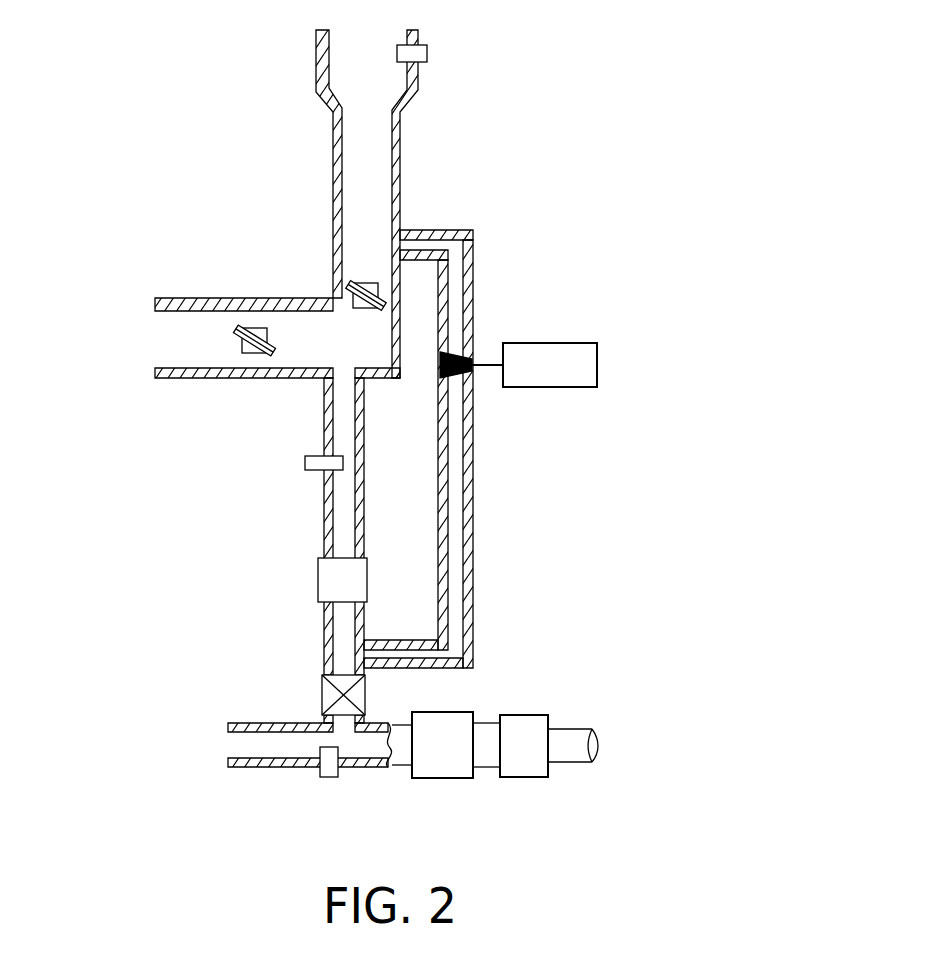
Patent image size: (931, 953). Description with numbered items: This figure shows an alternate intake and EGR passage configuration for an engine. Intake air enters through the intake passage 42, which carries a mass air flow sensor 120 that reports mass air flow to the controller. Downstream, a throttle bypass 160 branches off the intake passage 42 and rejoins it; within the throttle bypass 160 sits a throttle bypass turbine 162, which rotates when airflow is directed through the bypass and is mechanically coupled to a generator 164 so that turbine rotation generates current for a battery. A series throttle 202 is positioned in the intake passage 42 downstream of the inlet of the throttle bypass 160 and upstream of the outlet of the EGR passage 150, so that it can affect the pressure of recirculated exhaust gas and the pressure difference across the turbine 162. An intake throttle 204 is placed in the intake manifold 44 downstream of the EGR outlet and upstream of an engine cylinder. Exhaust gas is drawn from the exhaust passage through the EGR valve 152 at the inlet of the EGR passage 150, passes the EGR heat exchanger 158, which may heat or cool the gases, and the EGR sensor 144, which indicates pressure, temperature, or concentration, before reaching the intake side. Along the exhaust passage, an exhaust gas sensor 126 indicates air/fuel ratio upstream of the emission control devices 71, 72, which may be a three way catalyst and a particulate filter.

The intake passage 42 is at (381, 84).
The intake manifold 44 is at (196, 353).
The mass air flow sensor 120 is at (427, 46).
The throttle bypass 160 is at (498, 211).
The throttle bypass turbine 162 is at (440, 365).
The generator 164 is at (572, 377).
The series throttle 202 is at (358, 285).
The intake throttle 204 is at (253, 328).
The EGR sensor 144 is at (305, 463).
The EGR passage 150 is at (324, 519).
The EGR heat exchanger 158 is at (364, 591).
The EGR valve 152 is at (323, 678).
The exhaust gas sensor 126 is at (338, 778).
The emission control device 71 is at (457, 765).
The emission control device 72 is at (538, 765).